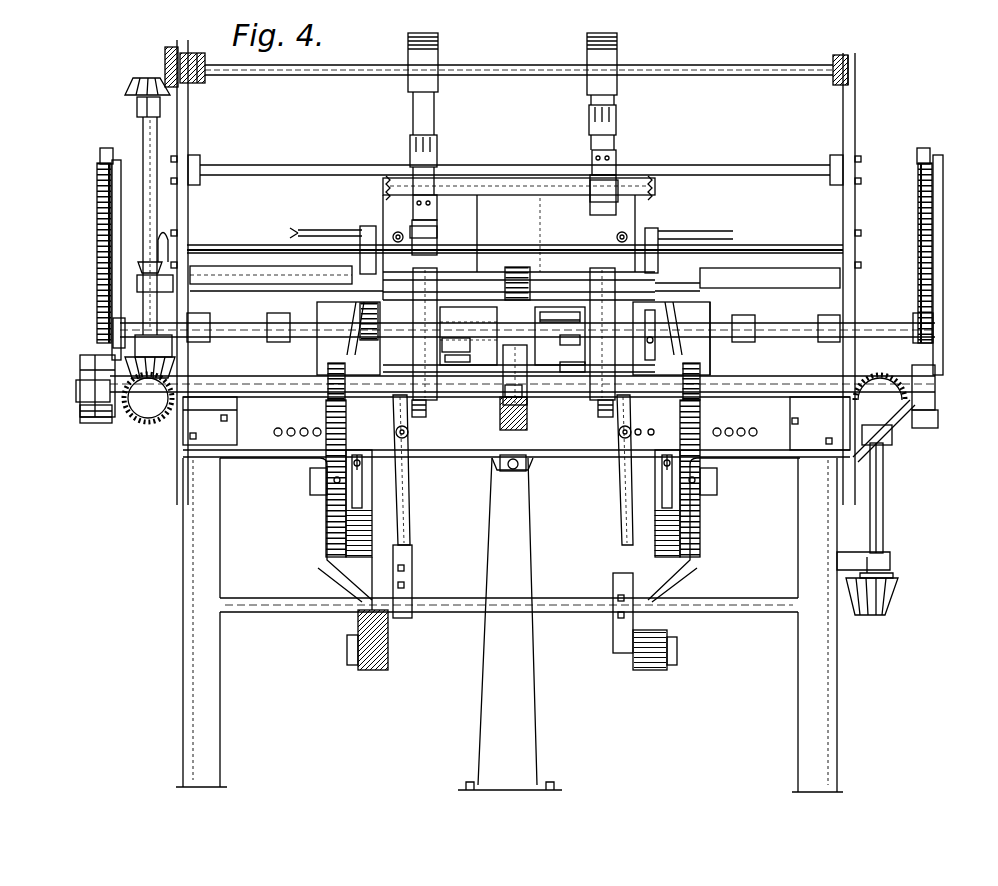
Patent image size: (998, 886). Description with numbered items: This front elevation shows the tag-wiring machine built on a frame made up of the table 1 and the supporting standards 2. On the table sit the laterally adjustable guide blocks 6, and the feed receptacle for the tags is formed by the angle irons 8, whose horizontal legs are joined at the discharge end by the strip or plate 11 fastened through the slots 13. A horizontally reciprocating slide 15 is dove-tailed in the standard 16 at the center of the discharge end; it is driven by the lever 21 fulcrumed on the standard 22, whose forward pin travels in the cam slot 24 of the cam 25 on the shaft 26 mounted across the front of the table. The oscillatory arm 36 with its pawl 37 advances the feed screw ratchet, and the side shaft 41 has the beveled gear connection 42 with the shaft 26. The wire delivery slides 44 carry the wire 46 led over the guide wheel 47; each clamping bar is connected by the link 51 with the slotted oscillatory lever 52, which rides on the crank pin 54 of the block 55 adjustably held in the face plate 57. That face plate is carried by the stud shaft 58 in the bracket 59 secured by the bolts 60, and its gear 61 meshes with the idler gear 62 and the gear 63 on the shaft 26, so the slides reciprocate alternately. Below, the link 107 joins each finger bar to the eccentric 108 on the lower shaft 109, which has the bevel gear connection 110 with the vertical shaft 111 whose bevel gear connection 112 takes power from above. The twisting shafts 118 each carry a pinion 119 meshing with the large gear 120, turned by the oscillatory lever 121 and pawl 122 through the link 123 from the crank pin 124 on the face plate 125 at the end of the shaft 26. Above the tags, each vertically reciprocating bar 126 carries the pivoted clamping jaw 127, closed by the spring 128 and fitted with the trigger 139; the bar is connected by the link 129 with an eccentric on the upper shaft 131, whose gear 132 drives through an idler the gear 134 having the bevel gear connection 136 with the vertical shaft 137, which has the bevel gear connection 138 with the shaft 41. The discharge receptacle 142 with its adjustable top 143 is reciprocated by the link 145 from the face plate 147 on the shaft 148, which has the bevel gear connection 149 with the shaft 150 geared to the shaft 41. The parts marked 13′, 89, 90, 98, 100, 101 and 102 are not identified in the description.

The table 1 is at (240, 437).
The supporting standards 2 is at (205, 535).
The guide blocks 6 is at (712, 318).
The angle irons 8 is at (527, 392).
The strip or plate 11 is at (572, 366).
The slots 13 is at (519, 299).
The stud 13' is at (510, 238).
The reciprocating slide 15 is at (511, 331).
The standard 16 is at (497, 328).
The lever 21 is at (531, 292).
The standard 22 is at (560, 336).
The cam slot 24 is at (506, 430).
The cam 25 is at (522, 430).
The shaft 26 is at (180, 412).
The oscillatory arm 36 is at (526, 464).
The pawl 37 is at (497, 466).
The shaft 41 is at (655, 338).
The beveled gear connection 42 is at (870, 372).
The wire delivery slides 44 is at (348, 345).
The wire 46 is at (336, 230).
The guide wheel 47 is at (374, 327).
The link 51 is at (354, 320).
The oscillatory lever 52 is at (410, 512).
The crank pin 54 is at (362, 478).
The block 55 is at (365, 480).
The face plate 57 is at (326, 550).
The stud shaft 58 is at (310, 482).
The bracket 59 is at (346, 528).
The bolts 60 is at (409, 433).
The gear 61 is at (334, 484).
The idler gear 62 is at (305, 437).
The gear 63 is at (328, 398).
The bevel gear 89 is at (165, 422).
The bracket 90 is at (82, 368).
The arm 98 is at (677, 284).
The post 100 is at (511, 326).
The pin 101 is at (510, 352).
The bracket 102 is at (426, 410).
The link 107 is at (410, 530).
The eccentric 108 is at (412, 568).
The shaft 109 is at (288, 612).
The bevel gear connection 110 is at (871, 583).
The vertical shaft 111 is at (883, 502).
The bevel gear connection 112 is at (893, 440).
The shafts 118 is at (165, 326).
The pinion 119 is at (110, 340).
The large gear 120 is at (125, 205).
The oscillatory lever 121 is at (97, 210).
The pawl 122 is at (113, 168).
The link 123 is at (112, 345).
The crank pin 124 is at (95, 393).
The face plate 125 is at (96, 425).
The vertically reciprocating bar 126 is at (437, 155).
The clamping jaw 127 is at (437, 242).
The spring 128 is at (437, 208).
The link 129 is at (438, 113).
The shaft 131 is at (320, 76).
The gear 132 is at (197, 86).
The gear 134 is at (175, 283).
The bevel gear connection 136 is at (151, 82).
The vertical shaft 137 is at (143, 133).
The bevel gear connection 138 is at (178, 365).
The trigger 139 is at (437, 232).
The discharge receptacle 142 is at (383, 184).
The adjustable top 143 is at (519, 186).
The link 145 is at (345, 285).
The face plate 147 is at (360, 263).
The shaft 148 is at (240, 247).
The bevel gear connection 149 is at (170, 248).
The shaft 150 is at (200, 290).